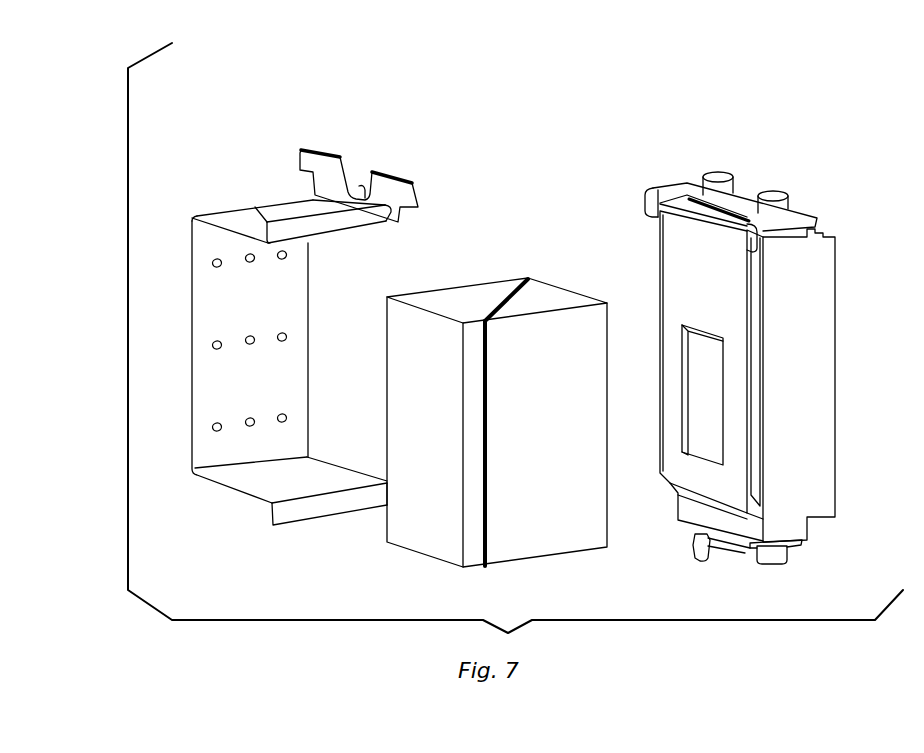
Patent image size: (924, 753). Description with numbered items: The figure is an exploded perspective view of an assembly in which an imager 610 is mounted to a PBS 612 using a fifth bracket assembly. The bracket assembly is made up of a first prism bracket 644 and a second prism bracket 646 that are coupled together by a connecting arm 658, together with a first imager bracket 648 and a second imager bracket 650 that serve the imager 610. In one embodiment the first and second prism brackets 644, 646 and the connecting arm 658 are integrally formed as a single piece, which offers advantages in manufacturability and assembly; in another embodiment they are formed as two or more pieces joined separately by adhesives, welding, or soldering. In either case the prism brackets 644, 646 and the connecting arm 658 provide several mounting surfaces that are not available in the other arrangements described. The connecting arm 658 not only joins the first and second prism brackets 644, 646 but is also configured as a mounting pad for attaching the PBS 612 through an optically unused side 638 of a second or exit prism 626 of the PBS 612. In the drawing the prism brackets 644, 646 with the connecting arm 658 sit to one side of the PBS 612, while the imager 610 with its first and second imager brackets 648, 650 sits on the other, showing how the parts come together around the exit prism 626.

The imager 610 is at (760, 366).
The PBS 612 is at (497, 397).
The second or exit prism 626 is at (431, 542).
The optically unused side 638 is at (467, 286).
The first prism bracket 644 is at (319, 152).
The second prism bracket 646 is at (320, 512).
The first imager bracket 648 is at (682, 192).
The second imager bracket 650 is at (772, 553).
The connecting arm 658 is at (265, 385).